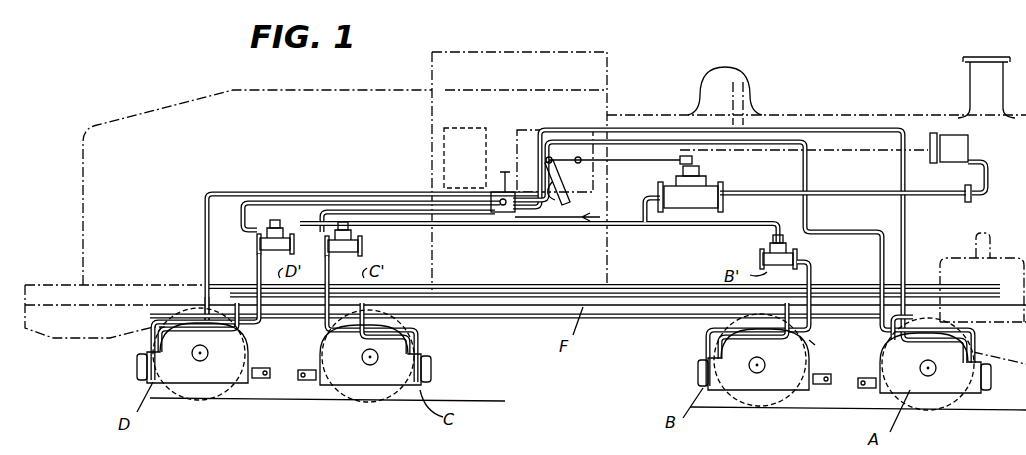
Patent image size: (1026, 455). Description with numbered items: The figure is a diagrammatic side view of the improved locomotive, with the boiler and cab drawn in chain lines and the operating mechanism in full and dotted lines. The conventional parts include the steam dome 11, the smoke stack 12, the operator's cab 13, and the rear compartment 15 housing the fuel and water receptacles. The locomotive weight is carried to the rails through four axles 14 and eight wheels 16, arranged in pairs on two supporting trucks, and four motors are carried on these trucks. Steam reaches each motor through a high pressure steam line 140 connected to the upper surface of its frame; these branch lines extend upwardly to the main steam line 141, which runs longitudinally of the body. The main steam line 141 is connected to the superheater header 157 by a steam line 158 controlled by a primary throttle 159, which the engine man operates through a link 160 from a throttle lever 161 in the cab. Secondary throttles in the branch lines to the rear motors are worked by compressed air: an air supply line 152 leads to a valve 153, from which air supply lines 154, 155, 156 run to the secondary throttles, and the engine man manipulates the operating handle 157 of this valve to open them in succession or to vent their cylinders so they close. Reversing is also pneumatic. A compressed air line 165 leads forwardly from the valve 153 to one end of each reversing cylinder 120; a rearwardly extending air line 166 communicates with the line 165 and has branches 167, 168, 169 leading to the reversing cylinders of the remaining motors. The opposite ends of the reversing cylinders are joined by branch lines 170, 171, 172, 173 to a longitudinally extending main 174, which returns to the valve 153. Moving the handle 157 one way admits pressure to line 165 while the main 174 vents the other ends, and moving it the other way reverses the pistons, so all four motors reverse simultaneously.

The steam dome 11 is at (752, 97).
The smoke stack 12 is at (971, 80).
The operator's cab 13 is at (447, 98).
The axle 14 is at (200, 364).
The rear compartment 15 is at (197, 90).
The wheel 16 is at (217, 393).
The reversing cylinder 120 is at (564, 366).
The high pressure steam line 140 is at (256, 325).
The main steam line 141 is at (551, 230).
The air supply line 152 is at (540, 220).
The valve 153 is at (498, 215).
The air supply line 154 is at (630, 140).
The air supply line 155 is at (385, 208).
The air supply line 156 is at (296, 202).
The operating handle 157 is at (526, 152).
The steam line 158 is at (847, 197).
The primary throttle 159 is at (720, 186).
The link 160 is at (633, 163).
The throttle lever 161 is at (570, 200).
The compressed air line 165 is at (597, 128).
The air line 166 is at (673, 290).
The branch 167 is at (783, 318).
The branch 168 is at (330, 333).
The branch 169 is at (200, 297).
The branch line 170 is at (913, 322).
The branch line 171 is at (810, 343).
The branch line 172 is at (358, 312).
The branch line 173 is at (246, 348).
The main 174 is at (272, 193).